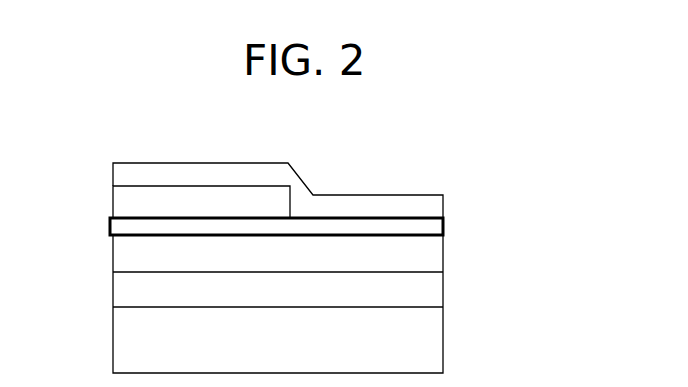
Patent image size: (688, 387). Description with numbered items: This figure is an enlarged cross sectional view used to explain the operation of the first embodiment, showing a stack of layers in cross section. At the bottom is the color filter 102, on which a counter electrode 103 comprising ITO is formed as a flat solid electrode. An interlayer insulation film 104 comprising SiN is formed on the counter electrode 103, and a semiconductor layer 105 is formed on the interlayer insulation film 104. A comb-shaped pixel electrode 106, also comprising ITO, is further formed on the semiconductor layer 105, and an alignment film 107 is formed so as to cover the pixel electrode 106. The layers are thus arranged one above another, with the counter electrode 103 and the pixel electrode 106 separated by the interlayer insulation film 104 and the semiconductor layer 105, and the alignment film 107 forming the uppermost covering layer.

The color filter 102 is at (435, 337).
The counter electrode 103 is at (435, 288).
The interlayer insulation film 104 is at (435, 252).
The semiconductor layer 105 is at (434, 224).
The pixel electrode 106 is at (135, 202).
The alignment film 107 is at (411, 200).